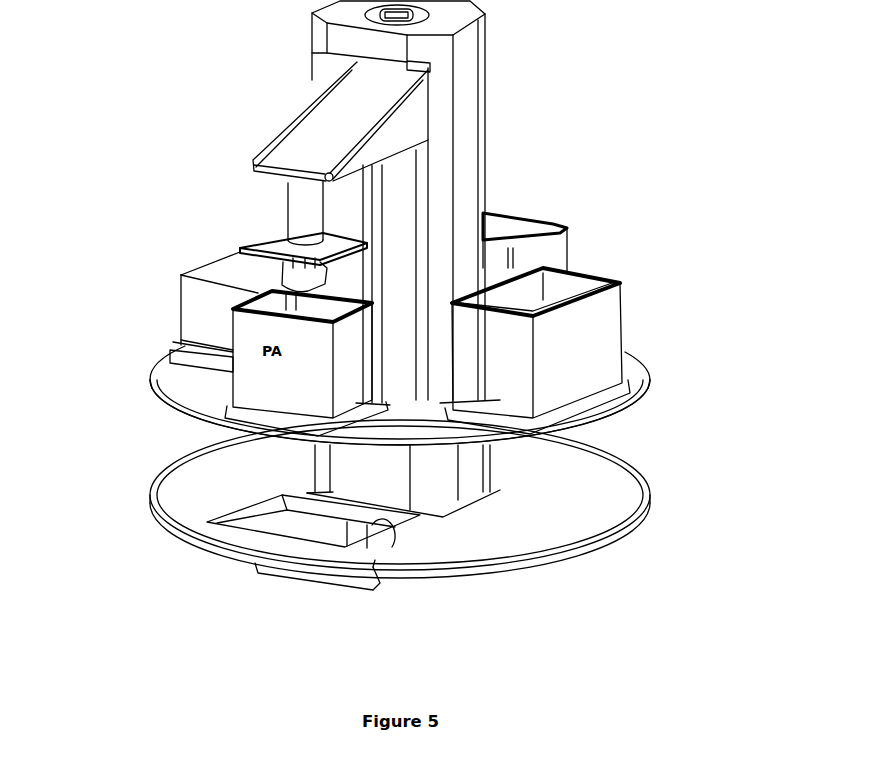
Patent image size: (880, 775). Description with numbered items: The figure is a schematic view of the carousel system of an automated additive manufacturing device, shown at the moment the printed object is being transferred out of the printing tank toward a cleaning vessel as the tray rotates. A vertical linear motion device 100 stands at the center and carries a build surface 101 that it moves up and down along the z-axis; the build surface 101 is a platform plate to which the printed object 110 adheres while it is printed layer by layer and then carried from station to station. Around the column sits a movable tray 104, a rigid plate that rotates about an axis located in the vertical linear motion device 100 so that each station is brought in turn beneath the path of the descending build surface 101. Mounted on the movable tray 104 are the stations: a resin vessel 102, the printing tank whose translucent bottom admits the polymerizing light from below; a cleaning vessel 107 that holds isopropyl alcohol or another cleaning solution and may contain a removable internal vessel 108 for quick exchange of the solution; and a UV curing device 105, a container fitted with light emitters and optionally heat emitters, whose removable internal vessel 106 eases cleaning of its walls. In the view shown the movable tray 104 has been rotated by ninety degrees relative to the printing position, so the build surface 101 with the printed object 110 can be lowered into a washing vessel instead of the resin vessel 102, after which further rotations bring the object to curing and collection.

The vertical linear motion device 100 is at (400, 200).
The build surface 101 is at (278, 237).
The resin vessel 102 is at (203, 327).
The movable tray 104 is at (625, 358).
The UV curing device 105 is at (556, 375).
The internal vessel 106 is at (525, 298).
The cleaning vessel 107 is at (553, 250).
The internal vessel 108 is at (510, 225).
The 3D printed object 110 is at (255, 276).